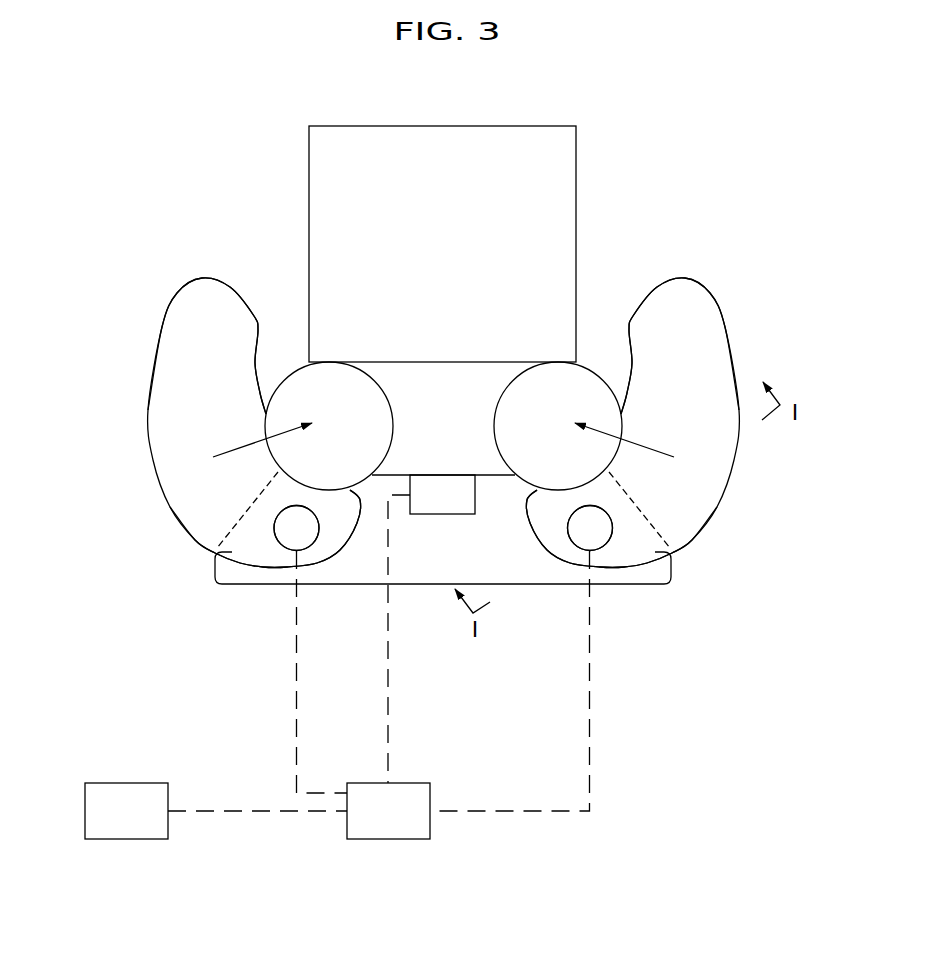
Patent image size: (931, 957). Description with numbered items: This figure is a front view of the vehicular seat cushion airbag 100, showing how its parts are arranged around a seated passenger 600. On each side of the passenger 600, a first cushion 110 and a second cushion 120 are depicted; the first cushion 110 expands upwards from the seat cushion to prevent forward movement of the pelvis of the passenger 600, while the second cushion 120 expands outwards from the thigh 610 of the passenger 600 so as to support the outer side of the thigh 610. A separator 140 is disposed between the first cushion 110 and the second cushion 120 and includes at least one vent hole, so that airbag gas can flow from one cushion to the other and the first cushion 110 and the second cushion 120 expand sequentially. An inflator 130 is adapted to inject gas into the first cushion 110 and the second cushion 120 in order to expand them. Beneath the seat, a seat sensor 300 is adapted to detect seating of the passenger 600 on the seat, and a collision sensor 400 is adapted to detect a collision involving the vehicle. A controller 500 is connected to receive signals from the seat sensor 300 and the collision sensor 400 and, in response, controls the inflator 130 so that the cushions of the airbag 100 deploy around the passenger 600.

The vehicular seat cushion airbag 100 is at (147, 457).
The first cushion 110 is at (332, 547).
The second cushion 120 is at (182, 322).
The inflator 130 is at (289, 540).
The separator 140 is at (240, 518).
The seat sensor 300 is at (445, 514).
The collision sensor 400 is at (125, 840).
The controller 500 is at (388, 840).
The passenger 600 is at (592, 163).
The thigh 610 is at (330, 408).